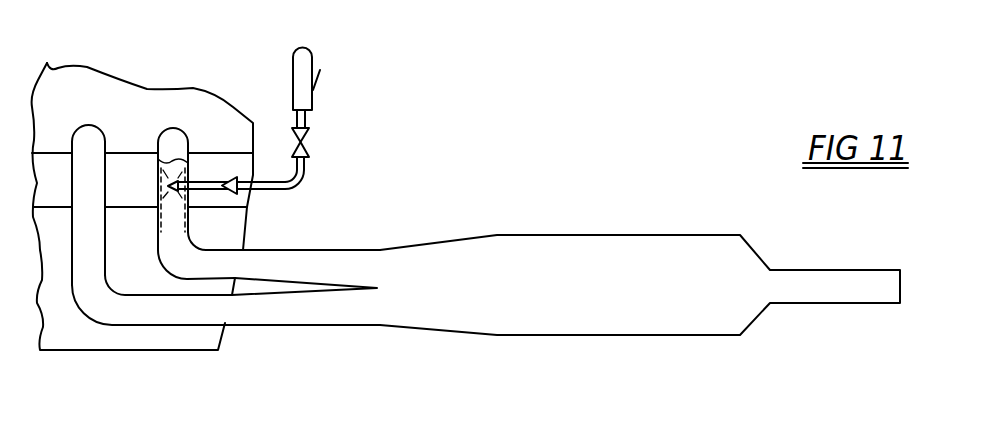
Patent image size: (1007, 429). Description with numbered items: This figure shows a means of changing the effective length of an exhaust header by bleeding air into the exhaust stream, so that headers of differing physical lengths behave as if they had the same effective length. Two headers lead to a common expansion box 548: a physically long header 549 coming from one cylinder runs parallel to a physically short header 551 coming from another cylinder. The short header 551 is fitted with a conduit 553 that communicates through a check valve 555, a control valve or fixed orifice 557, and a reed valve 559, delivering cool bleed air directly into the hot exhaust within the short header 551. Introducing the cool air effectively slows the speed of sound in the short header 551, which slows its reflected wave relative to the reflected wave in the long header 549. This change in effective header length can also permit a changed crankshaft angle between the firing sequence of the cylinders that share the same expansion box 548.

The expansion box 548 is at (640, 285).
The long header 549 is at (120, 325).
The short header 551 is at (213, 250).
The conduit 553 is at (280, 192).
The check valve 555 is at (234, 190).
The control valve or fixed orifice 557 is at (308, 140).
The reed valve 559 is at (304, 48).